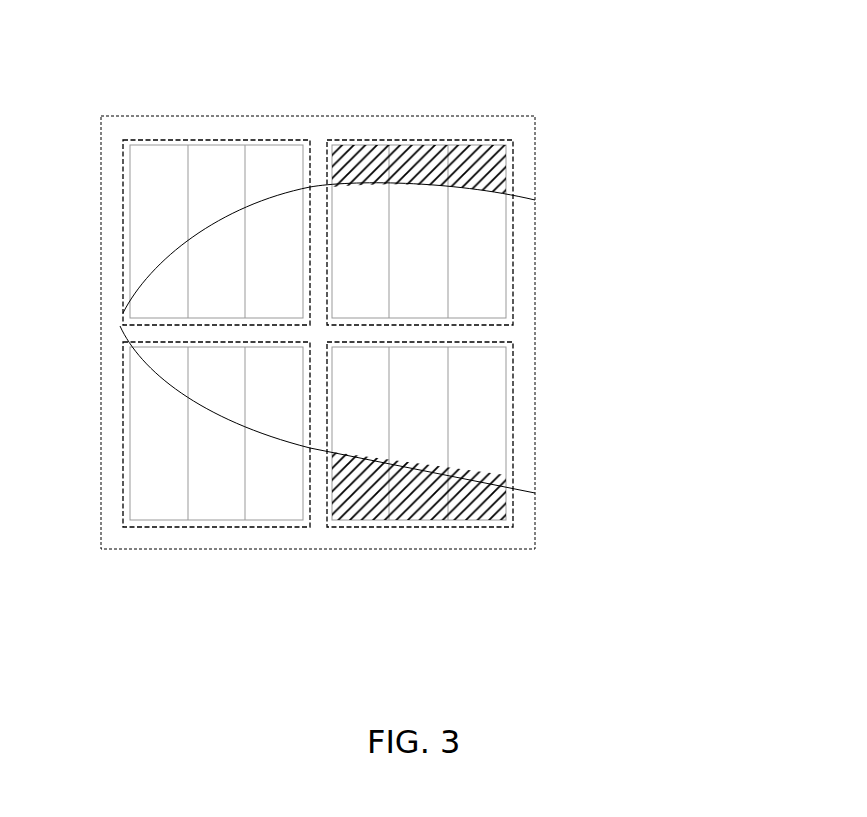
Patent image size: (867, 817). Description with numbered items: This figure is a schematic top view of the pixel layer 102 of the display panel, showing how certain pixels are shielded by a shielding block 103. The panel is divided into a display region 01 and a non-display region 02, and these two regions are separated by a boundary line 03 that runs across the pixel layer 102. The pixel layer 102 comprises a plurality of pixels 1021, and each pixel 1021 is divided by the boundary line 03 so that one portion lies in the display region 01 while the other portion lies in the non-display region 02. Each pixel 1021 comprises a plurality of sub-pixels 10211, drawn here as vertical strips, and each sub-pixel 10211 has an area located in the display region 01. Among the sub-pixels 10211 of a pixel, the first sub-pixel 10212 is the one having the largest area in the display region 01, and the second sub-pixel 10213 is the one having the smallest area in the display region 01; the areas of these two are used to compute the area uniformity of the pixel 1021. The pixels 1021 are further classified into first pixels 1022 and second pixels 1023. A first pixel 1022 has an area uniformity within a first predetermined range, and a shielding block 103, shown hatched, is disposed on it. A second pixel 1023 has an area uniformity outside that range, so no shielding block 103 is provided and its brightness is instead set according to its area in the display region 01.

The display region 01 is at (540, 346).
The non-display region 02 is at (429, 330).
The boundary line 03 is at (529, 189).
The pixel layer 102 is at (411, 330).
The shielding block 103 is at (465, 157).
The pixel 1021 is at (429, 330).
The first pixel 1022 is at (429, 334).
The second pixel 1023 is at (218, 140).
The sub-pixel 10211 is at (429, 423).
The first sub-pixel 10212 is at (473, 456).
The second sub-pixel 10213 is at (362, 422).